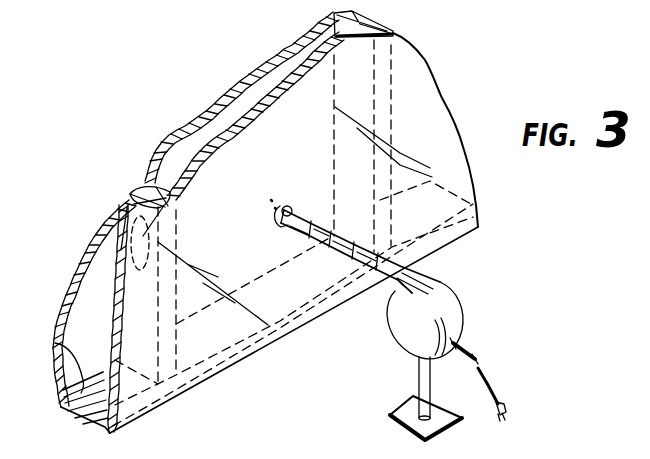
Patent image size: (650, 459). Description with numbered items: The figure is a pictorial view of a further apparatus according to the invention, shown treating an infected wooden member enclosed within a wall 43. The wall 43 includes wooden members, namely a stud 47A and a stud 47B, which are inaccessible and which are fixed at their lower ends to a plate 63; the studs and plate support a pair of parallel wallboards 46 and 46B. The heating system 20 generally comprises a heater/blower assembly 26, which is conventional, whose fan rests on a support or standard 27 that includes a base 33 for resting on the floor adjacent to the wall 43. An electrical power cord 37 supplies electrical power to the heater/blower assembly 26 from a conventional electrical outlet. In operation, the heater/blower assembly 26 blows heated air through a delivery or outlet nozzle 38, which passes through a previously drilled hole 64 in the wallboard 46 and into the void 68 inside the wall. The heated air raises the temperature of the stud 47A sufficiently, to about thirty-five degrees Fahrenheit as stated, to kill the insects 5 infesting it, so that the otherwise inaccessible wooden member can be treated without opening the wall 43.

The insects 5 is at (124, 244).
The system 20 is at (390, 322).
The heater/blower assembly 26 is at (430, 286).
The support or standard 27 is at (414, 380).
The base 33 is at (390, 418).
The electrical power cord 37 is at (468, 347).
The delivery or outlet nozzle 38 is at (299, 234).
The wall 43 is at (56, 372).
The wallboard 46 is at (308, 146).
The wallboard 46B is at (260, 78).
The stud 47A is at (136, 187).
The stud 47B is at (394, 31).
The plate 63 is at (55, 343).
The hole 64 is at (287, 206).
The void 68 is at (215, 122).